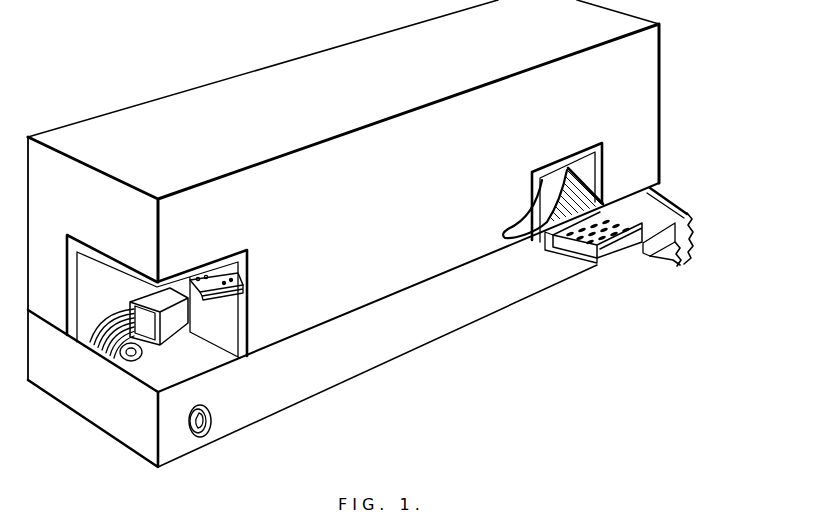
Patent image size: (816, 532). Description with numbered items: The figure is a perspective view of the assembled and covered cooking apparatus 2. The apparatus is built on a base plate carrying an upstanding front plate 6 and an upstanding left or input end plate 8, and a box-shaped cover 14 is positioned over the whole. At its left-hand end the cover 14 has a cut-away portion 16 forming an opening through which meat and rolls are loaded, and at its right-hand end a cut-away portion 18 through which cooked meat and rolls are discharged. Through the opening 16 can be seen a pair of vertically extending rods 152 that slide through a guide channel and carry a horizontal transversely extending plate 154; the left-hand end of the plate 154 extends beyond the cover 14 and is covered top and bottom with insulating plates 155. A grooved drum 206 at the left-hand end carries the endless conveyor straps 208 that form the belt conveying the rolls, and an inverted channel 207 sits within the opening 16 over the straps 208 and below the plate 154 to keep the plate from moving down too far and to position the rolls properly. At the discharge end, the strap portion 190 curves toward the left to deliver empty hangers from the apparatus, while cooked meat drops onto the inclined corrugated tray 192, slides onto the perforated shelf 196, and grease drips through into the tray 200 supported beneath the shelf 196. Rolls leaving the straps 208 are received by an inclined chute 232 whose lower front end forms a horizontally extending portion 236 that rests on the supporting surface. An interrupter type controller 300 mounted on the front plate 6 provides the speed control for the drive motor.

The cooking apparatus 2 is at (526, 375).
The front plate 6 is at (257, 411).
The left or input end plate 8 is at (87, 405).
The cover 14 is at (366, 221).
The cut-away portion 16 is at (282, 296).
The cut-away portion 18 is at (502, 194).
The rods 152 is at (207, 275).
The plate 154 is at (217, 291).
The insulating plates 155 is at (237, 280).
The strap portion 190 is at (518, 221).
The corrugated tray 192 is at (572, 172).
The shelf 196 is at (573, 243).
The tray 200 is at (593, 263).
The drum 206 is at (113, 362).
The inverted channel 207 is at (138, 298).
The conveyor straps 208 is at (143, 318).
The inclined chute 232 is at (628, 210).
The horizontally extending portion 236 is at (684, 262).
The interrupter type controller 300 is at (203, 437).